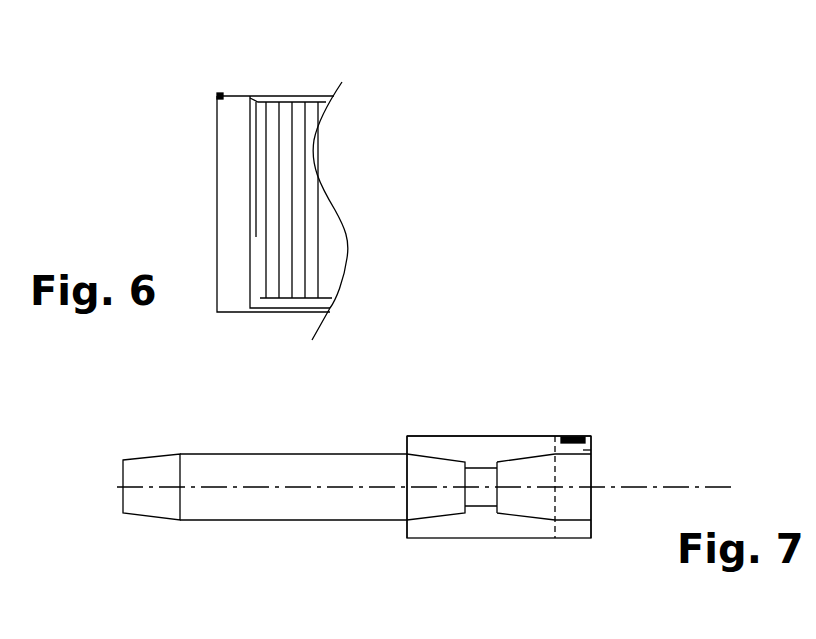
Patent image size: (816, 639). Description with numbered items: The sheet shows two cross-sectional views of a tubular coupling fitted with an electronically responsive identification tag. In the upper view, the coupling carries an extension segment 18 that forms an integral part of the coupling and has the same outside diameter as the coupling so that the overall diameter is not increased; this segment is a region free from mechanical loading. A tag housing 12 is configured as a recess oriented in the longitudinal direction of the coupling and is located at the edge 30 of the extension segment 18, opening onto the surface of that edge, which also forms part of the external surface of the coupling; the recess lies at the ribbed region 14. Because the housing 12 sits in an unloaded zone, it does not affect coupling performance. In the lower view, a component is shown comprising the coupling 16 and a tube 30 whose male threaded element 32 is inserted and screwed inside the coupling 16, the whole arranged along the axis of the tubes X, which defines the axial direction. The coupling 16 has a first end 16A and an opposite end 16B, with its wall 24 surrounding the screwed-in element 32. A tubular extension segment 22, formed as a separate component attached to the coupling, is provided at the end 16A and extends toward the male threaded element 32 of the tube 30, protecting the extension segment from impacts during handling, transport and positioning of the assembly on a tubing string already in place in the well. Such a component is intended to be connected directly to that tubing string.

In FIG. 6, the tag housing 12 is at (218, 97).
In FIG. 7, the tag housing 12 is at (568, 437).
In FIG. 6, the ribbed portion 14 is at (270, 280).
In FIG. 7, the coupling 16 is at (545, 402).
In FIG. 7, the end of coupling 16A is at (408, 436).
In FIG. 7, the second end of housing 16B is at (591, 523).
In FIG. 6, the extension segment 18 is at (288, 102).
In FIG. 7, the extension segment 22 is at (591, 450).
In FIG. 7, the housing wall 24 is at (500, 436).
In FIG. 6, the tube 30 is at (220, 94).
In FIG. 7, the tube 30 is at (217, 510).
In FIG. 7, the male threaded element 32 is at (147, 498).
In FIG. 7, the axis of the tubes X is at (727, 487).